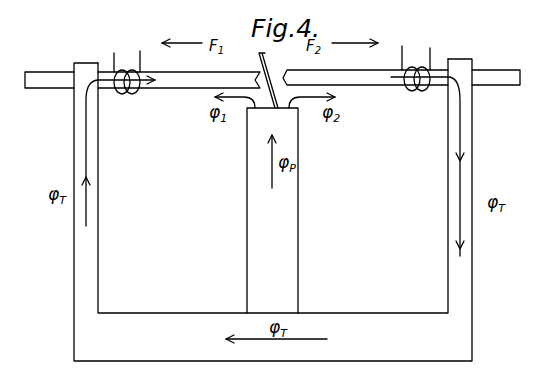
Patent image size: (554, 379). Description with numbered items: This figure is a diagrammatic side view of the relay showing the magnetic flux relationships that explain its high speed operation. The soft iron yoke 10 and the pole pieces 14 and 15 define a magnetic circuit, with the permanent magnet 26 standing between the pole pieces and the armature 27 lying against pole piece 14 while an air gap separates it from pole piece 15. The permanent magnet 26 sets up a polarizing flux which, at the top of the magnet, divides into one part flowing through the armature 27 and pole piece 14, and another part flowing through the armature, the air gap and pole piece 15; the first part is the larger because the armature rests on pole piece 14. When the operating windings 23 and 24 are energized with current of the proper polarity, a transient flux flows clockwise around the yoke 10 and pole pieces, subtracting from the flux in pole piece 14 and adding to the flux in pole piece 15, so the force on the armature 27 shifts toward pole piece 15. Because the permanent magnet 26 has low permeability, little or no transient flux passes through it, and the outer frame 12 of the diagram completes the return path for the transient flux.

The yoke 10 is at (296, 210).
The outer yoke frame 12 is at (465, 258).
The pole piece 14 is at (162, 80).
The pole piece 15 is at (372, 78).
The operating winding 23 is at (106, 46).
The operating winding 24 is at (422, 50).
The permanent magnet 26 is at (290, 224).
The armature 27 is at (257, 45).